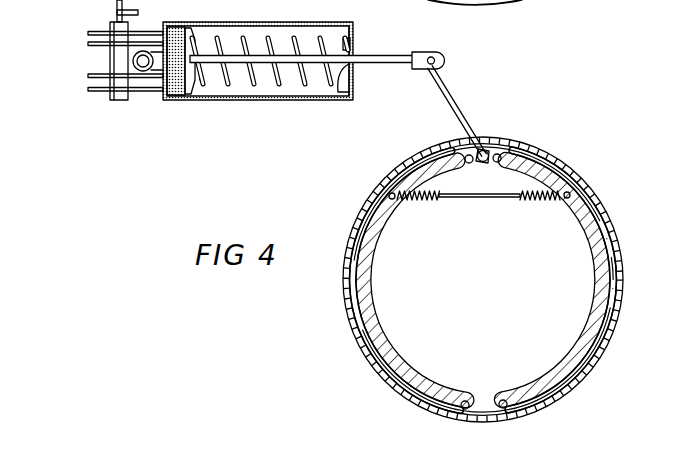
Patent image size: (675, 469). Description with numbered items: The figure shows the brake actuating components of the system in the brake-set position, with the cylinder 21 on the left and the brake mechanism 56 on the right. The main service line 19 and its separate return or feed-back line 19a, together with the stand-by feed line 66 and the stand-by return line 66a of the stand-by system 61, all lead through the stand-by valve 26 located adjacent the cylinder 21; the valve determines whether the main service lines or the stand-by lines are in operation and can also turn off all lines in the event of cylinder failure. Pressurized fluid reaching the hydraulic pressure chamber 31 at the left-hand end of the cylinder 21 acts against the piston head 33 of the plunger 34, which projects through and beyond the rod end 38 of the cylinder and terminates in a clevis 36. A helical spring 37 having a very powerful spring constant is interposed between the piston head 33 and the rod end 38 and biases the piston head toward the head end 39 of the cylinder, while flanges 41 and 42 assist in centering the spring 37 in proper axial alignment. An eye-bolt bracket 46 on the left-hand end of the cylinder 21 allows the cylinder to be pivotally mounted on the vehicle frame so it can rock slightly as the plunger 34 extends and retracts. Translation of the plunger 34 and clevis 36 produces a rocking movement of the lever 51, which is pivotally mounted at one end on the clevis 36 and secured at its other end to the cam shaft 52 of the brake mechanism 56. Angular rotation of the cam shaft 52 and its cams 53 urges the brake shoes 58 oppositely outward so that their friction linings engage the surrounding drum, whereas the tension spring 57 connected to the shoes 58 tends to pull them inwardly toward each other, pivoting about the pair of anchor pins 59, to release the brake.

The main service line 19 is at (90, 77).
The return line 19a is at (93, 91).
The cylinder 21 is at (243, 24).
The stand-by valve 26 is at (116, 101).
The hydraulic pressure chamber 31 is at (177, 27).
The piston head 33 is at (190, 30).
The plunger 34 is at (368, 56).
The clevis 36 is at (443, 55).
The helical spring 37 is at (292, 36).
The rod end 38 is at (354, 33).
The head end 39 is at (164, 27).
The flange 41 is at (201, 82).
The flange 42 is at (340, 76).
The eye-bolt bracket 46 is at (156, 68).
The lever 51 is at (458, 91).
The cam shaft 52 is at (495, 150).
The cam 53 is at (465, 152).
The brake mechanism 56 is at (596, 160).
The tension spring 57 is at (470, 203).
The brake shoe 58 is at (364, 281).
The anchor pin 59 is at (501, 398).
The stand-by system 61 is at (603, 217).
The stand-by feed line 66 is at (88, 44).
The return line 66a is at (88, 31).